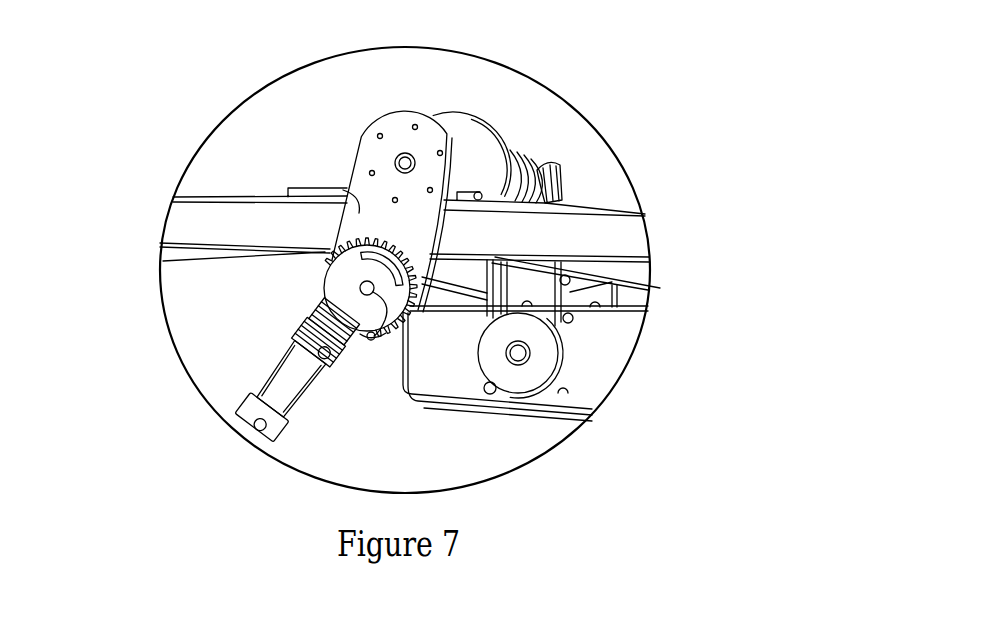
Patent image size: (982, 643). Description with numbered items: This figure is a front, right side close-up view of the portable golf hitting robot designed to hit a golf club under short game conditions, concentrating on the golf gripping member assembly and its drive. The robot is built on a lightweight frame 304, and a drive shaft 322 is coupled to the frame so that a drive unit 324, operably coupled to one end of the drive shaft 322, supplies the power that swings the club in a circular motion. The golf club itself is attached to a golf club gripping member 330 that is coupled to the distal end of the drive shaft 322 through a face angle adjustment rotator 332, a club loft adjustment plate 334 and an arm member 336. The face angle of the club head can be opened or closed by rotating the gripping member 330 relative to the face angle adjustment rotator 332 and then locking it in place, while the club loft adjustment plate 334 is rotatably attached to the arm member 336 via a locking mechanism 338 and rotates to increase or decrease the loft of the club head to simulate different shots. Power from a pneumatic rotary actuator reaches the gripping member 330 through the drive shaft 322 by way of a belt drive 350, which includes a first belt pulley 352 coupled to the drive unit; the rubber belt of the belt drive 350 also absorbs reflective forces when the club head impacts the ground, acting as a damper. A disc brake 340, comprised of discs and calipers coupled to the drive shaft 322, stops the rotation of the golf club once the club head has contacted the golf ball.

The frame 304 is at (557, 235).
The drive shaft 322 is at (380, 136).
The drive unit 324 is at (600, 360).
The golf club gripping member 330 is at (288, 370).
The face angle adjustment rotator 332 is at (323, 271).
The club loft adjustment plate 334 is at (170, 258).
The arm member 336 is at (178, 196).
The locking mechanism 338 is at (388, 337).
The disc brake 340 is at (483, 146).
The belt drive 350 is at (660, 287).
The first belt pulley 352 is at (563, 365).